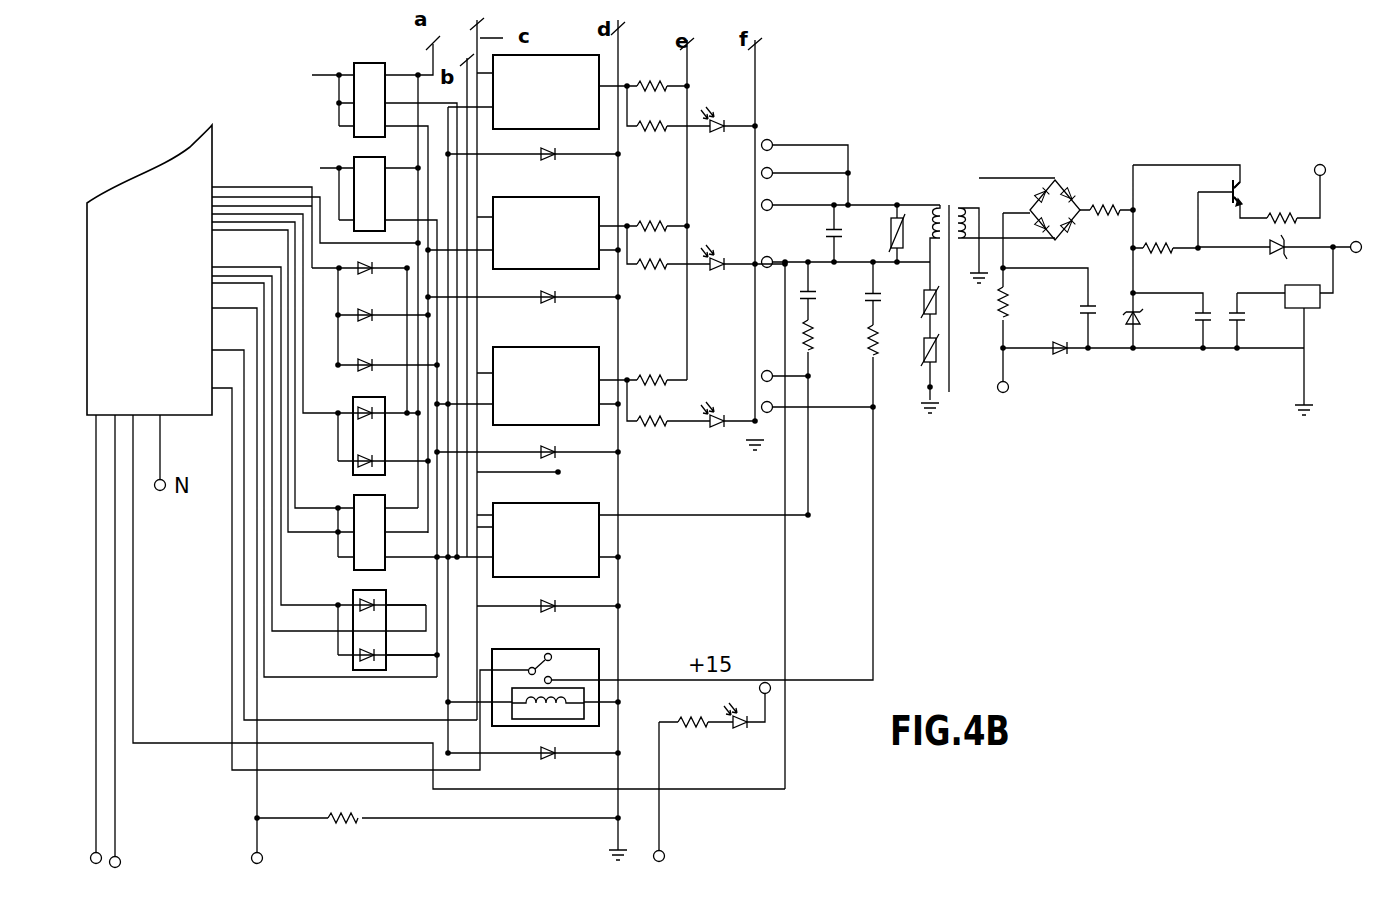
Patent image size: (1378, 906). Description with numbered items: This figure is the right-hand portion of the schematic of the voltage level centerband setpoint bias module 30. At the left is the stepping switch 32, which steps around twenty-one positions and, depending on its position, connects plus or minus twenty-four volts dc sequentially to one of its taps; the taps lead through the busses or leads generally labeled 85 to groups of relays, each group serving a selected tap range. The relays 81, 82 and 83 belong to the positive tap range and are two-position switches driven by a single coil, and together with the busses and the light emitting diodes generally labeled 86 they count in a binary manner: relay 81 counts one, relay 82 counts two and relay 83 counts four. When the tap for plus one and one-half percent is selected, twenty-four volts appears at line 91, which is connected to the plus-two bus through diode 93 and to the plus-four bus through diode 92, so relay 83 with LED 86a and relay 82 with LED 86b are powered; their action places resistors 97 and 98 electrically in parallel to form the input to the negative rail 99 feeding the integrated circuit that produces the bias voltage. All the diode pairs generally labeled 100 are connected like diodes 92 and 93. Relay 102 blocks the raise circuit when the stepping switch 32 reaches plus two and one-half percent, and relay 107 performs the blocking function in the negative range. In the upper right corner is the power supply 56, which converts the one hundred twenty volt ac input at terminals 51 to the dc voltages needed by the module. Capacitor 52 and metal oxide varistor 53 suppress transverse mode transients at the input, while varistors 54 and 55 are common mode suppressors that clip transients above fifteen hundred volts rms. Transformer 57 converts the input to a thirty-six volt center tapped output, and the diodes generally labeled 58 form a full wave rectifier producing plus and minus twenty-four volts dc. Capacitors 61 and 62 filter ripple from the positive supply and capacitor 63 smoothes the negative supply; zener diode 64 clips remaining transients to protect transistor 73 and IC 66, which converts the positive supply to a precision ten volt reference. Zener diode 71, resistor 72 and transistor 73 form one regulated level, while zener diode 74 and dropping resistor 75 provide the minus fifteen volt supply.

The setpoint module 30 is at (268, 116).
The stepping switch 32 is at (223, 175).
The diode pairs 100 is at (370, 148).
The busses or leads 85 is at (240, 243).
The line 91 is at (315, 414).
The diode 92 is at (366, 396).
The diode 93 is at (356, 483).
The relay 83 is at (554, 132).
The relay 82 is at (554, 271).
The relay 81 is at (550, 346).
The relay 107 is at (538, 503).
The relay 102 is at (547, 648).
The resistor 98 is at (675, 86).
The negative rail 99 is at (684, 168).
The resistor 97 is at (674, 230).
The light emitting diode 86a is at (725, 118).
The light emitting diode 86b is at (722, 255).
The light emitting diodes 86 is at (720, 276).
The terminals 51 is at (772, 212).
The capacitor 52 is at (840, 228).
The metal oxide varistor 53 is at (890, 230).
The metal oxide varistor 54 is at (922, 304).
The metal oxide varistor 55 is at (920, 356).
The transformer 57 is at (956, 204).
The power supply 56 is at (1012, 172).
The diodes 58 is at (1086, 202).
The resistor 72 is at (1186, 232).
The transistor 73 is at (1246, 198).
The zener diode 71 is at (1280, 252).
The IC 66 is at (1314, 310).
The capacitor 61 is at (1196, 326).
The capacitor 62 is at (1240, 320).
The capacitor 63 is at (1078, 308).
The zener diode 64 is at (1142, 320).
The zener diode 74 is at (1068, 345).
The dropping resistor 75 is at (998, 312).